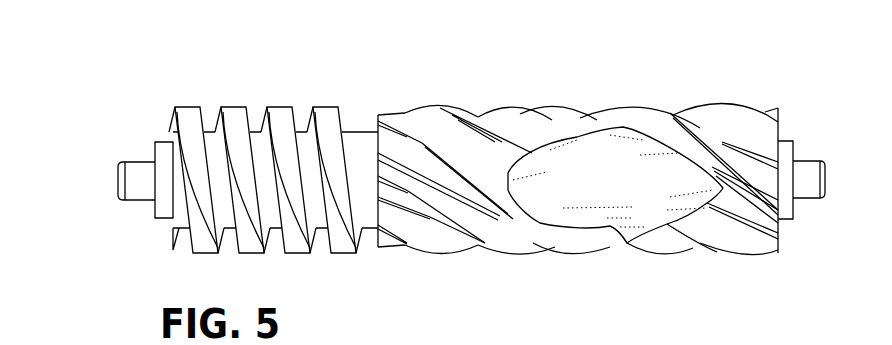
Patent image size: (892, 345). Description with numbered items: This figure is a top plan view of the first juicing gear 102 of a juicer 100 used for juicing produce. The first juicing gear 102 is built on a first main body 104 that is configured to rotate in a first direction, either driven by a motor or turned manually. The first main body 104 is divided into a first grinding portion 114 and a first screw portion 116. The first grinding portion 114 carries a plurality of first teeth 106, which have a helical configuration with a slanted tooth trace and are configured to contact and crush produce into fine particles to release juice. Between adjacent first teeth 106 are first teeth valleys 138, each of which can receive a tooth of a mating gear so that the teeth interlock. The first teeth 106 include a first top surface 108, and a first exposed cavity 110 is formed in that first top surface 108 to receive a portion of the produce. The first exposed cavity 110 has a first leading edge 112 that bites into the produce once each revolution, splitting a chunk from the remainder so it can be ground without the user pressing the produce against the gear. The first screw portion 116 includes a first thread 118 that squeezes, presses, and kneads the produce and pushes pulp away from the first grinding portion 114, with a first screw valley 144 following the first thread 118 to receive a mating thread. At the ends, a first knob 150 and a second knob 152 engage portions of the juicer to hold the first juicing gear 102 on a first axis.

The juicer 100 is at (438, 157).
The first juicing gear 102 is at (133, 80).
The first main body 104 is at (360, 128).
The first teeth 106 is at (424, 108).
The first top surface 108 is at (505, 172).
The first exposed cavity 110 is at (594, 168).
The first leading edge 112 is at (624, 244).
The first grinding portion 114 is at (646, 88).
The first screw portion 116 is at (212, 100).
The first thread 118 is at (278, 112).
The first teeth valleys 138 is at (737, 140).
The first screw valley 144 is at (276, 225).
The first knob 150 is at (812, 167).
The second knob 152 is at (118, 181).